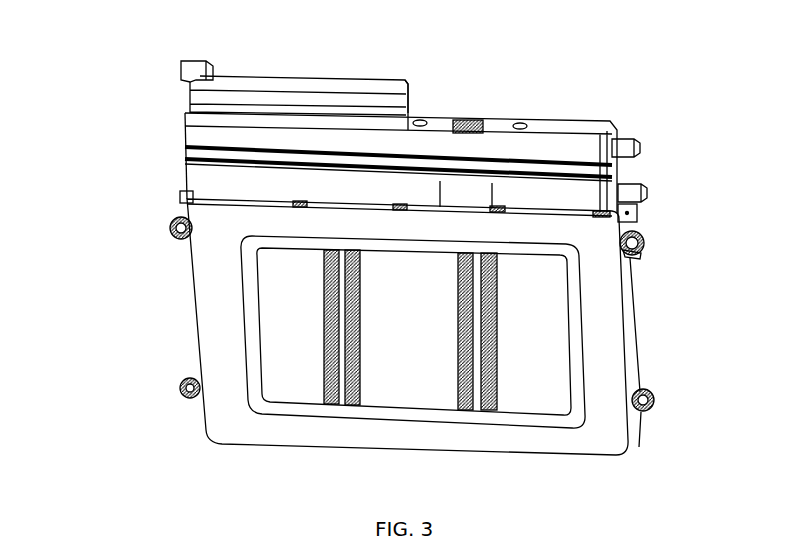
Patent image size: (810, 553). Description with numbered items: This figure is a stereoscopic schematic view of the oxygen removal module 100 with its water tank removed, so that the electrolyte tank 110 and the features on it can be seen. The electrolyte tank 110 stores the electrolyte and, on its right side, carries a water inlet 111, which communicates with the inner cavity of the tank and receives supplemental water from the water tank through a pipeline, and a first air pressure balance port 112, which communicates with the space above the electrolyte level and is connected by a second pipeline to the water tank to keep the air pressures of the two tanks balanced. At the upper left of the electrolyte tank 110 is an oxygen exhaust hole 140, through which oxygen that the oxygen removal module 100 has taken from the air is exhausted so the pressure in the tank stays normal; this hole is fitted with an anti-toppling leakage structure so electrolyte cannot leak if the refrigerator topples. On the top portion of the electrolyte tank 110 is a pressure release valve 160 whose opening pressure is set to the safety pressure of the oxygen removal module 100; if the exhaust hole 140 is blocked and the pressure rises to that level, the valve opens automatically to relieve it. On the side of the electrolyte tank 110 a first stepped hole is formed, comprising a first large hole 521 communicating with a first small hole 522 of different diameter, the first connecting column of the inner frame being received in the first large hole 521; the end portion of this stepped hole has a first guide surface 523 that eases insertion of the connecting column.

The oxygen removal module 100 is at (170, 252).
The electrolyte tank 110 is at (218, 318).
The water inlet 111 is at (628, 185).
The first air pressure balance port 112 is at (623, 142).
The oxygen exhaust hole 140 is at (178, 63).
The pressure release valve 160 is at (467, 123).
The first large hole 521 is at (645, 247).
The first small hole 522 is at (642, 237).
The first guide surface 523 is at (637, 255).